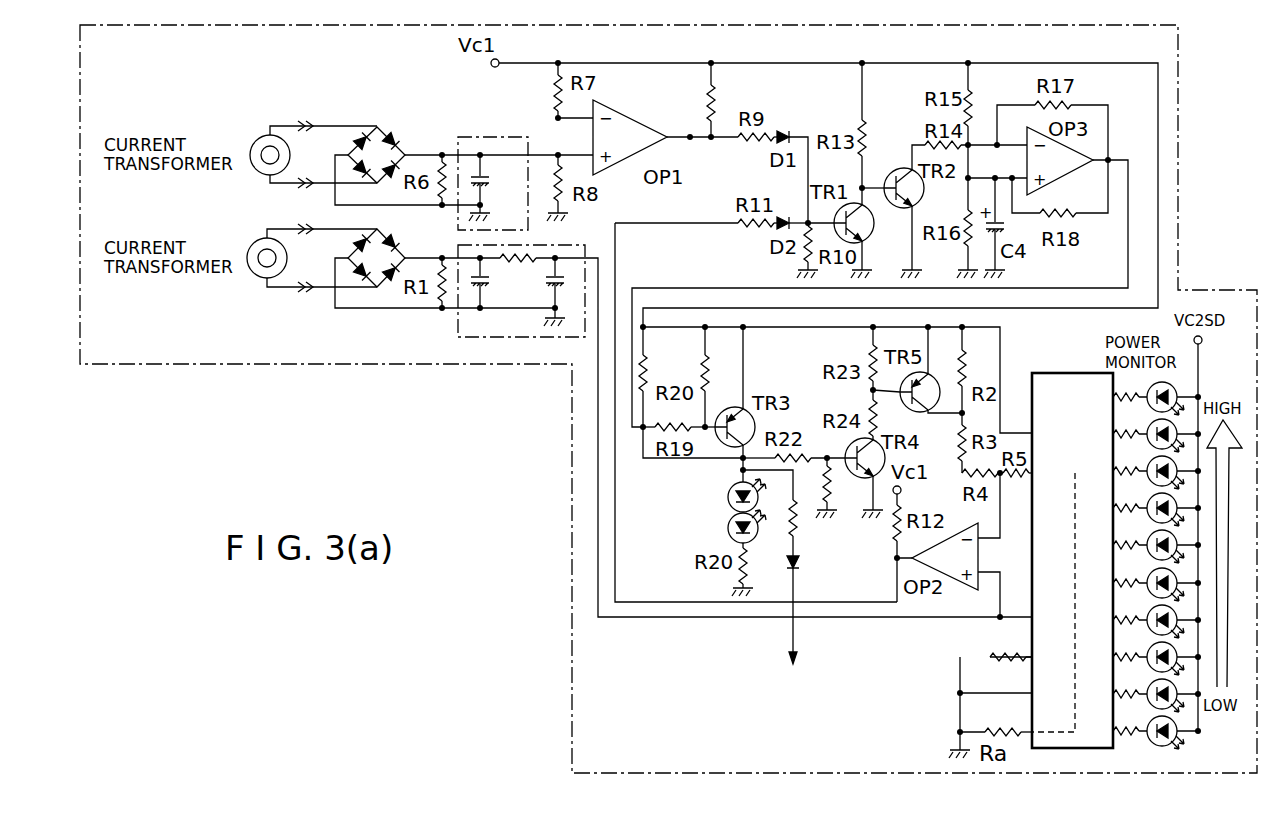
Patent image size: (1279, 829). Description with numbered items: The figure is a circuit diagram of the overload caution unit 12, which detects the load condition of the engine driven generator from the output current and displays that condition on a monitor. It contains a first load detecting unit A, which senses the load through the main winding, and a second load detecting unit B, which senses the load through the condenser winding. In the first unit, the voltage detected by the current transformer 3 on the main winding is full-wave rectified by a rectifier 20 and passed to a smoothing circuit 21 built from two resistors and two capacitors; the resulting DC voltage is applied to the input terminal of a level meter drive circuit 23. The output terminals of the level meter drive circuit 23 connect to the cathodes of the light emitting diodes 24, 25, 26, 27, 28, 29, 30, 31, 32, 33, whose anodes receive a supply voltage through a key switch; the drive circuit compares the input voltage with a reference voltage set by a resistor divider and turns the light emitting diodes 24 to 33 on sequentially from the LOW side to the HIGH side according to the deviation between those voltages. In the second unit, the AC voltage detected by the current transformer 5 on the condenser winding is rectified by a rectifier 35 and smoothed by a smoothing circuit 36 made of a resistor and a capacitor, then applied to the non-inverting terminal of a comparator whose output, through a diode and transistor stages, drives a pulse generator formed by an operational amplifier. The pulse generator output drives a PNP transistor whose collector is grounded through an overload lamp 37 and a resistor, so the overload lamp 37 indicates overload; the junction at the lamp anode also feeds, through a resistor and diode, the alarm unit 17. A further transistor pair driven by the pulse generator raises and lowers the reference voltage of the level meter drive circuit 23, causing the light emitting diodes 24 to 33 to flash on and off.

The current transformer 3 is at (251, 245).
The current transformer 5 is at (254, 141).
The overload caution unit 12 is at (228, 368).
The alarm unit 17 is at (792, 580).
The rectifier 20 is at (379, 302).
The smoothing circuit 21 is at (456, 332).
The level meter drive circuit 23 is at (1060, 373).
The light emitting diode 24 is at (1150, 744).
The light emitting diode 25 is at (1150, 707).
The light emitting diode 26 is at (1150, 670).
The light emitting diode 27 is at (1150, 633).
The light emitting diode 28 is at (1150, 596).
The light emitting diode 29 is at (1150, 558).
The light emitting diode 30 is at (1150, 521).
The light emitting diode 31 is at (1150, 484).
The light emitting diode 32 is at (1150, 447).
The light emitting diode 33 is at (1150, 410).
The rectifier 35 is at (405, 128).
The smoothing circuit 36 is at (498, 127).
The overload lamp 37 is at (729, 512).
The first load detecting unit A is at (348, 286).
The second load detecting unit B is at (379, 124).